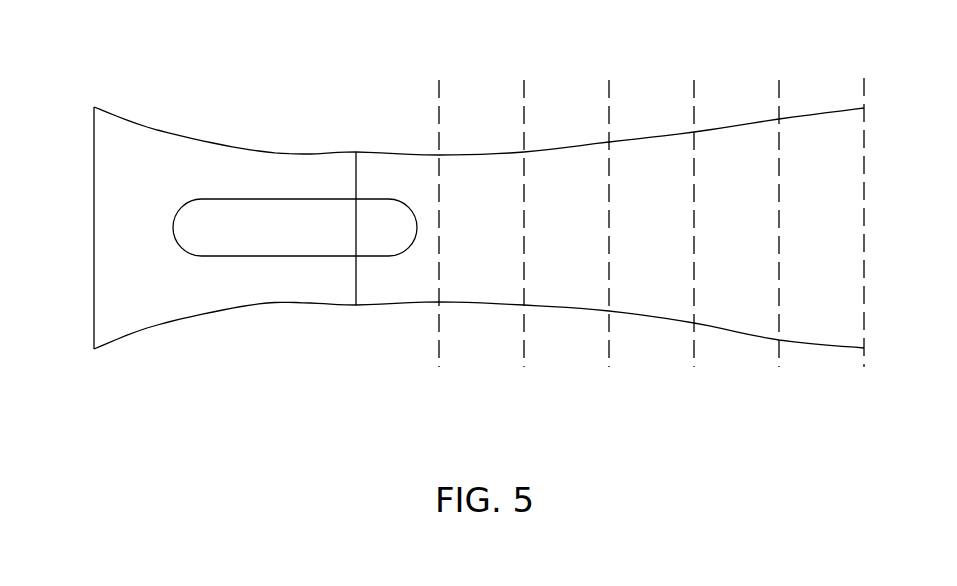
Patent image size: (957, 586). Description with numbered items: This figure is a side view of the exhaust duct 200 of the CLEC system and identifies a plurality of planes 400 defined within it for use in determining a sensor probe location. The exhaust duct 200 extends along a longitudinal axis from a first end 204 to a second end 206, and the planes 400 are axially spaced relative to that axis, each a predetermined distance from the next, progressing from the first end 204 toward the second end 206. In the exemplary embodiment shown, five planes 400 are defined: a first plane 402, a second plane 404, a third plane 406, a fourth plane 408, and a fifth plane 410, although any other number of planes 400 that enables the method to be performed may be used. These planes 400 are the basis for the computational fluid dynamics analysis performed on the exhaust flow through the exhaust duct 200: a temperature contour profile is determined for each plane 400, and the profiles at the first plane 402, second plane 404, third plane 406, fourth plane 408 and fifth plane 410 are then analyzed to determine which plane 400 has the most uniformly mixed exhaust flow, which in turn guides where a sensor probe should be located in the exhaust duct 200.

The exhaust duct 200 is at (867, 120).
The first end 204 is at (355, 136).
The second end 206 is at (870, 357).
The planes 400 is at (601, 223).
The first plane 402 is at (455, 70).
The second plane 404 is at (560, 70).
The third plane 406 is at (645, 70).
The fourth plane 408 is at (728, 70).
The fifth plane 410 is at (813, 70).